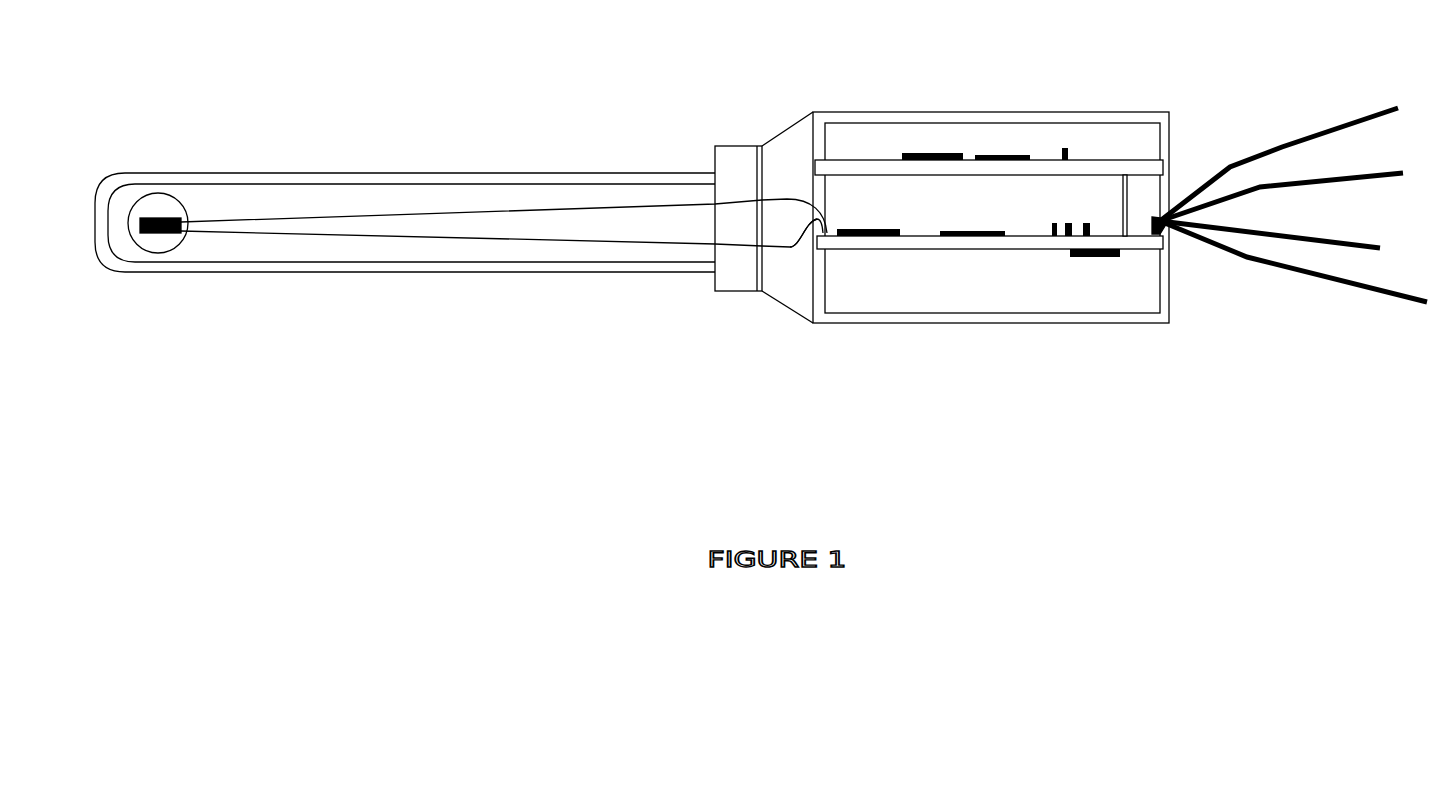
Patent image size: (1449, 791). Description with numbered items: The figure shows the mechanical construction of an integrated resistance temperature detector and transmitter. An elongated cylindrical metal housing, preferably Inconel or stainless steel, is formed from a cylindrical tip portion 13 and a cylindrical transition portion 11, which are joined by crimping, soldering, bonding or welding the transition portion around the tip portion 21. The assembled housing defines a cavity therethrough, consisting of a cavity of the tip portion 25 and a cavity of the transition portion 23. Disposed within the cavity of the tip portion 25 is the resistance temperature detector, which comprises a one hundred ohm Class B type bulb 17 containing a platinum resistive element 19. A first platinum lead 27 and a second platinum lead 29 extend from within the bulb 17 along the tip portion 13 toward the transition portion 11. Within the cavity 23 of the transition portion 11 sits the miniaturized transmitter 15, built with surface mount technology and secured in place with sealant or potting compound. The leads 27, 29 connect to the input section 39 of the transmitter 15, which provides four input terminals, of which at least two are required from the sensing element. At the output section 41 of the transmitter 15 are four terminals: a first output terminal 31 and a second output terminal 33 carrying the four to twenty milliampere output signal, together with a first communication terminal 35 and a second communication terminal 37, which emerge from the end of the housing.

The transition portion 11 is at (910, 112).
The tip portion 13 is at (392, 175).
The miniaturized transmitter 15 is at (1047, 240).
The bulb 17 is at (152, 197).
The platinum resistive element 19 is at (175, 218).
The tip portion joint 21 is at (733, 147).
The cavity of the transition portion 23 is at (1020, 295).
The cavity of the tip portion 25 is at (270, 245).
The first platinum lead 27 is at (617, 212).
The second platinum lead 29 is at (613, 242).
The first output terminal 31 is at (1353, 120).
The second output terminal 33 is at (1385, 182).
The first communication terminal 35 is at (1357, 247).
The second communication terminal 37 is at (1423, 302).
The input section 39 is at (813, 243).
The output section 41 is at (1158, 240).